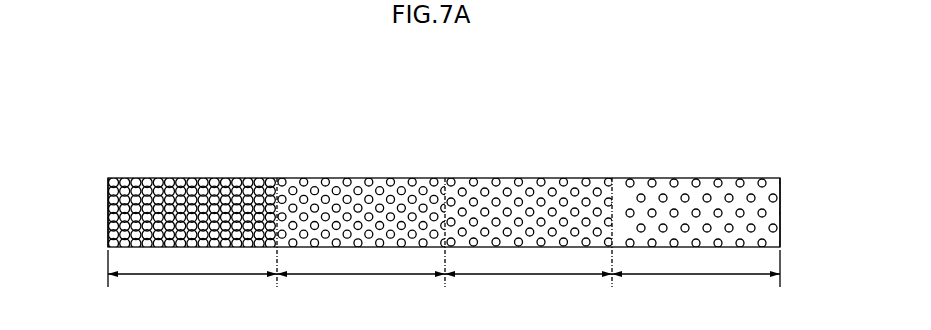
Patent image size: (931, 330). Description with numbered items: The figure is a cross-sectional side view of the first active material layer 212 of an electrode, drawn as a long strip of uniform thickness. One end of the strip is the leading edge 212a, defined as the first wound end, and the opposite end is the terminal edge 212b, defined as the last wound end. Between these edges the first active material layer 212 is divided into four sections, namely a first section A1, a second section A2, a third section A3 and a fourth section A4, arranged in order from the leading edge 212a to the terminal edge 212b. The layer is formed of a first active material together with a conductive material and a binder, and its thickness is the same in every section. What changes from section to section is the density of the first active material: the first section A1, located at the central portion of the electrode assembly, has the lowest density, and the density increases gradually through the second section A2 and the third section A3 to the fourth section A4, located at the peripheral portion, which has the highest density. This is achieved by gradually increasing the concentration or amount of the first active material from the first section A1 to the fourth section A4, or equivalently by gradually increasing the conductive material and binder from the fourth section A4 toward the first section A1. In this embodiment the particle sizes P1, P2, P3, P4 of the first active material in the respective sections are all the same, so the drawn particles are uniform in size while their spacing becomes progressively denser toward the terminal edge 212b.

The first active material layer 212 is at (90, 70).
The leading edge 212a is at (780, 170).
The terminal edge 212b is at (108, 170).
The particle size of the first active material in the first section P1 is at (696, 181).
The particle size of the first active material in the second section P2 is at (519, 181).
The particle size of the first active material in the third section P3 is at (357, 181).
The particle size of the first active material in the fourth section P4 is at (178, 181).
The first section A1 is at (696, 274).
The second section A2 is at (528, 284).
The third section A3 is at (361, 284).
The fourth section A4 is at (192, 274).